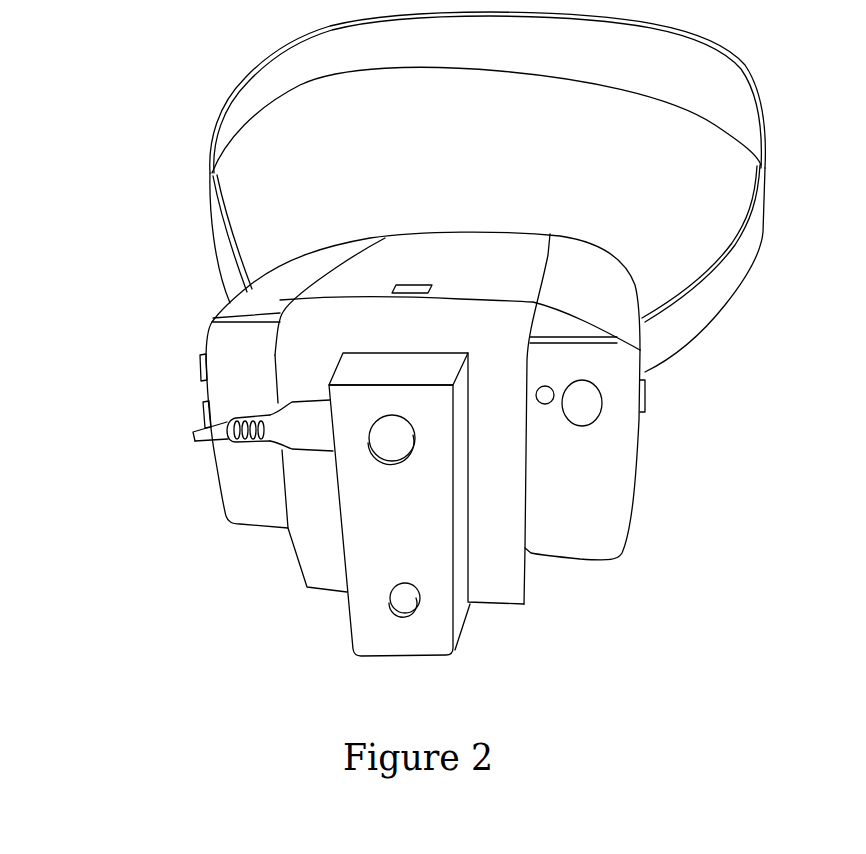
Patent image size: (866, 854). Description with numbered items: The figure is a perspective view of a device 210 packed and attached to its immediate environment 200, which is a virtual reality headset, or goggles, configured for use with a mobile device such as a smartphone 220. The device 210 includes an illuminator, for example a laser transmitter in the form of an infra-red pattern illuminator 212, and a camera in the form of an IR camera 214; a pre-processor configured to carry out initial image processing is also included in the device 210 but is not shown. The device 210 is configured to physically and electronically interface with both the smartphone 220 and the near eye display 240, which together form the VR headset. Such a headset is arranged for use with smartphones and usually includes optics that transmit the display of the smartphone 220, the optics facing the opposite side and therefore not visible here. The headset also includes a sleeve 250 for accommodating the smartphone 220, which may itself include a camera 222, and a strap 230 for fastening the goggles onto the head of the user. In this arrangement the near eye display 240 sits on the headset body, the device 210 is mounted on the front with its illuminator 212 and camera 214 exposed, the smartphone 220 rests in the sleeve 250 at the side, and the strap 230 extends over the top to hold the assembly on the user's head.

The immediate environment 200 is at (112, 36).
The device 210 is at (462, 642).
The infra-red (IR) pattern illuminator 212 is at (405, 598).
The IR camera 214 is at (392, 438).
The smartphone 220 is at (602, 527).
The camera 222 is at (580, 402).
The strap 230 is at (748, 240).
The near eye display 240 is at (385, 247).
The sleeve 250 is at (291, 372).